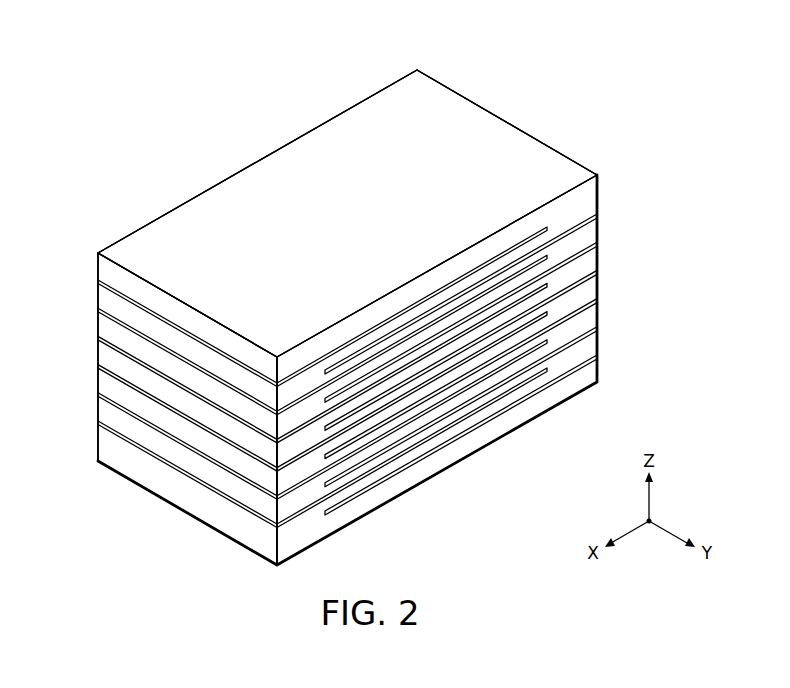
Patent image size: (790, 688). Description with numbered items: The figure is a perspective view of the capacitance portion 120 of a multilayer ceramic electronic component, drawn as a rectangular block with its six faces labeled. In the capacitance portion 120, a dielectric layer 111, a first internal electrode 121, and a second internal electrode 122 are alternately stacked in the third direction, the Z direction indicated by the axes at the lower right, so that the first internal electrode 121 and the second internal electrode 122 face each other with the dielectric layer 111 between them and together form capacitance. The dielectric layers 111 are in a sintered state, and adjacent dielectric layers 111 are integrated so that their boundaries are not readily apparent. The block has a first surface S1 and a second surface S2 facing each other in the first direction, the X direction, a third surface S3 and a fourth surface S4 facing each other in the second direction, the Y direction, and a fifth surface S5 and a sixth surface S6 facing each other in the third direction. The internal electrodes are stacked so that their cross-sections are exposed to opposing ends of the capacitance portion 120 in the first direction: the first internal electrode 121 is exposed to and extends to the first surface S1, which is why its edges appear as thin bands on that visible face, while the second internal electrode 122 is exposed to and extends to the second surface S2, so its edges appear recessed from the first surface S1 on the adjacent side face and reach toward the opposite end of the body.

The capacitance portion 120 is at (182, 29).
The dielectric layer 111 is at (108, 352).
The first internal electrode 121 is at (118, 294).
The second internal electrode 122 is at (593, 229).
The first surface S1 is at (176, 461).
The second surface S2 is at (510, 146).
The third surface S3 is at (578, 358).
The fourth surface S4 is at (203, 214).
The fifth surface S5 is at (347, 145).
The sixth surface S6 is at (402, 482).